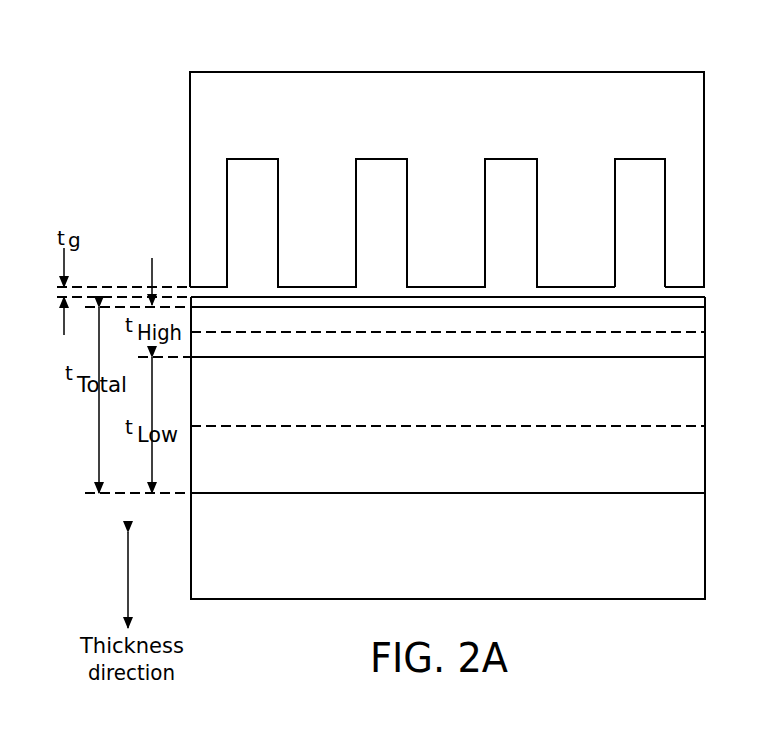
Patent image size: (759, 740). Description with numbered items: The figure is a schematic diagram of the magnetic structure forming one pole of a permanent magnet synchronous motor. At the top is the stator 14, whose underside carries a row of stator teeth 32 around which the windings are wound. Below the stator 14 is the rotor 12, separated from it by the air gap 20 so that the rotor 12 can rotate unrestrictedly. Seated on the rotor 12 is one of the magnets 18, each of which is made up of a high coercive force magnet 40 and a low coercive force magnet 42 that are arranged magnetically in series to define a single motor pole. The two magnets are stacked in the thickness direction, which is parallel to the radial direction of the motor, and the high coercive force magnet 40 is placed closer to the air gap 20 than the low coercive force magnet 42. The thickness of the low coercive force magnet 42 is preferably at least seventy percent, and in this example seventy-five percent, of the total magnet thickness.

The stator 14 is at (639, 110).
The stator teeth 32 is at (683, 220).
The air gap 20 is at (712, 292).
The high coercive force magnet 40 is at (683, 320).
The low coercive force magnet 42 is at (683, 380).
The magnets 18 is at (731, 460).
The rotor 12 is at (653, 553).